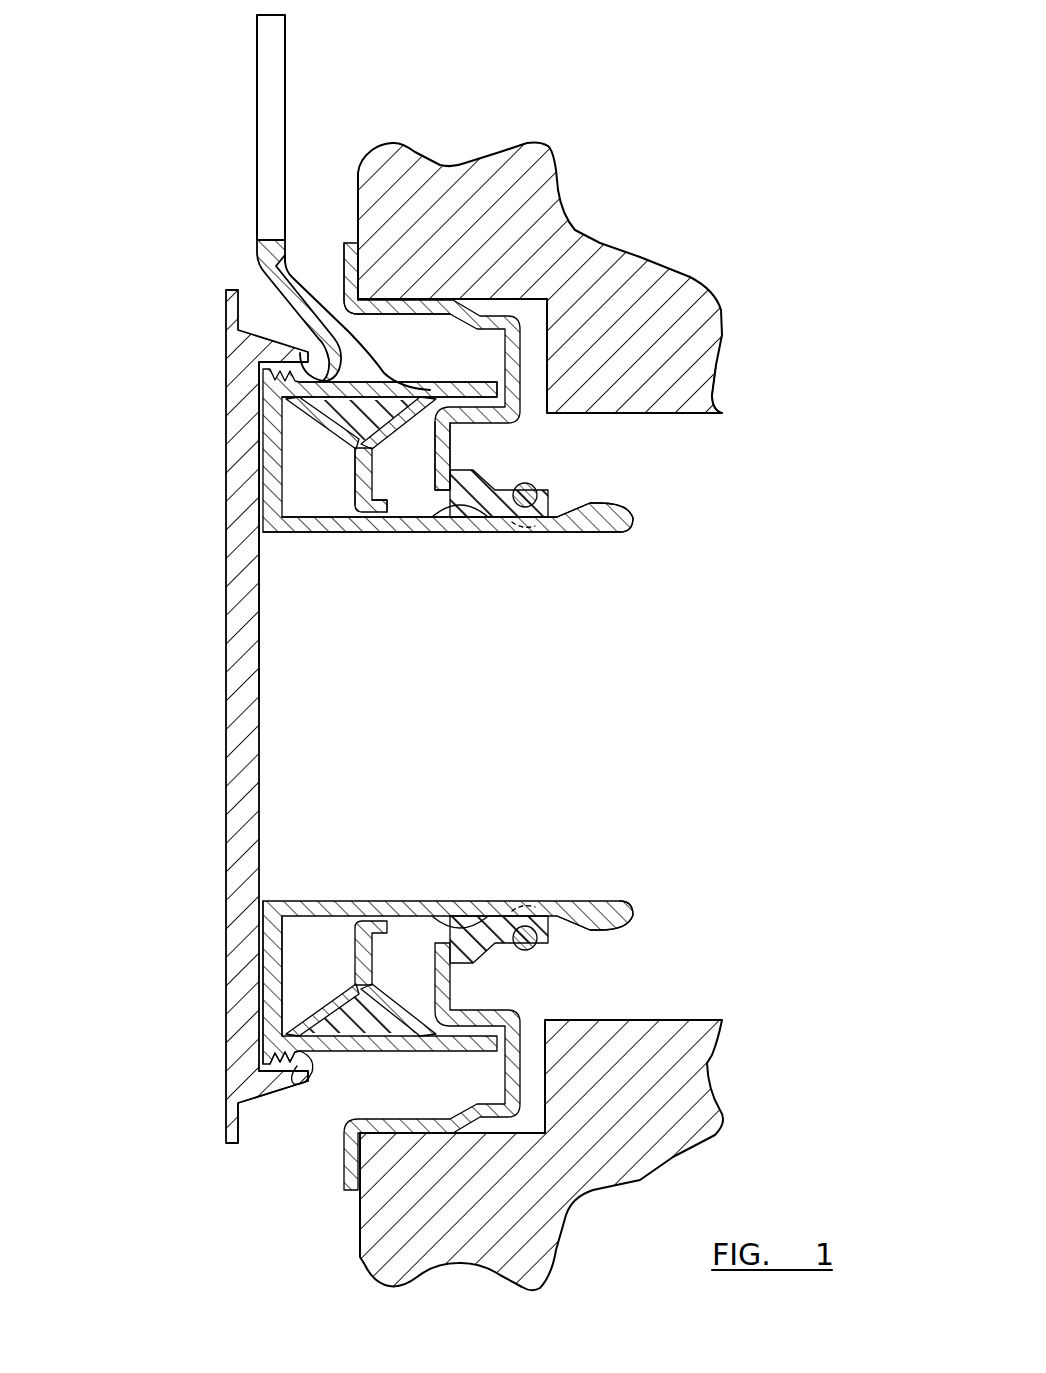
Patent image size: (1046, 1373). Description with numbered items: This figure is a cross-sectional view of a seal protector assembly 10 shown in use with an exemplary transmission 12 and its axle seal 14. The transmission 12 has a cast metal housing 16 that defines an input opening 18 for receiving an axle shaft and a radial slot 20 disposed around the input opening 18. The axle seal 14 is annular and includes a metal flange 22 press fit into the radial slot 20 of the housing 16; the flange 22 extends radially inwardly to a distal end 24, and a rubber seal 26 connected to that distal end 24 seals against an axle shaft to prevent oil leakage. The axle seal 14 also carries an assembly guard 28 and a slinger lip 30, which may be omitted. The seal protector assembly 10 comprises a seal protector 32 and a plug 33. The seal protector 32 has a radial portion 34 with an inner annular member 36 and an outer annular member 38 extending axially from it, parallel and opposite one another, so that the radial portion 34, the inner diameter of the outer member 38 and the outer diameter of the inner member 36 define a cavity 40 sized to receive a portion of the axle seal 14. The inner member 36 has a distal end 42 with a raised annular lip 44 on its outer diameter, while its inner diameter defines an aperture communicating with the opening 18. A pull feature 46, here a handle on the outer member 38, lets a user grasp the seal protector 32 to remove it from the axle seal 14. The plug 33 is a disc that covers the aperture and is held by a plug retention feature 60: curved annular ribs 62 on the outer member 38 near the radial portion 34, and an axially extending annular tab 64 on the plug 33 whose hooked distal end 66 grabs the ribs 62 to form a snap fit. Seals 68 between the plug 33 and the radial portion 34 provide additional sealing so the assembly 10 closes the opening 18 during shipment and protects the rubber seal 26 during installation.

The seal protector assembly 10 is at (168, 138).
The transmission 12 is at (687, 166).
The axle seal 14 is at (562, 467).
The housing 16 is at (520, 143).
The input opening 18 is at (707, 413).
The radial slot 20 is at (528, 420).
The metal flange 22 is at (413, 299).
The distal end 24 is at (442, 462).
The rubber seal 26 is at (470, 480).
The assembly guard 28 is at (358, 505).
The slinger lip 30 is at (350, 456).
The seal protector 32 is at (478, 538).
The plug 33 is at (220, 355).
The radial portion 34 is at (258, 445).
The inner annular member 36 is at (392, 516).
The outer annular member 38 is at (430, 390).
The cavity 40 is at (305, 517).
The distal end 42 is at (634, 526).
The annular lip 44 is at (612, 505).
The pull feature 46 is at (287, 100).
The plug retention feature 60 is at (262, 318).
The annular rib 62 is at (268, 1046).
The annular tab 64 is at (260, 1100).
The hooked distal end 66 is at (312, 1072).
The seal 68 is at (263, 1012).